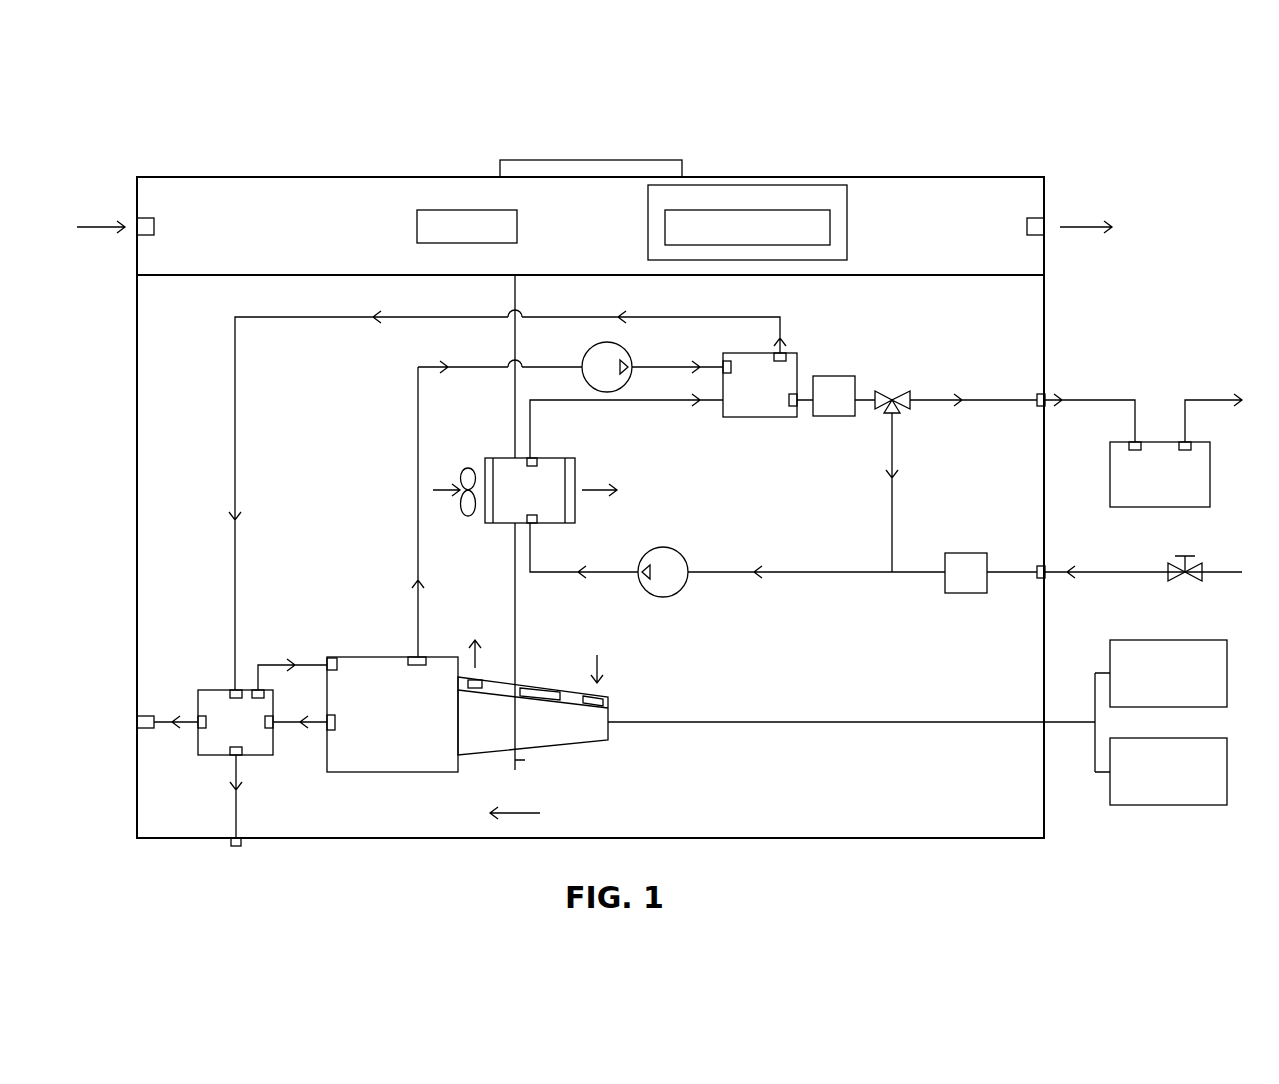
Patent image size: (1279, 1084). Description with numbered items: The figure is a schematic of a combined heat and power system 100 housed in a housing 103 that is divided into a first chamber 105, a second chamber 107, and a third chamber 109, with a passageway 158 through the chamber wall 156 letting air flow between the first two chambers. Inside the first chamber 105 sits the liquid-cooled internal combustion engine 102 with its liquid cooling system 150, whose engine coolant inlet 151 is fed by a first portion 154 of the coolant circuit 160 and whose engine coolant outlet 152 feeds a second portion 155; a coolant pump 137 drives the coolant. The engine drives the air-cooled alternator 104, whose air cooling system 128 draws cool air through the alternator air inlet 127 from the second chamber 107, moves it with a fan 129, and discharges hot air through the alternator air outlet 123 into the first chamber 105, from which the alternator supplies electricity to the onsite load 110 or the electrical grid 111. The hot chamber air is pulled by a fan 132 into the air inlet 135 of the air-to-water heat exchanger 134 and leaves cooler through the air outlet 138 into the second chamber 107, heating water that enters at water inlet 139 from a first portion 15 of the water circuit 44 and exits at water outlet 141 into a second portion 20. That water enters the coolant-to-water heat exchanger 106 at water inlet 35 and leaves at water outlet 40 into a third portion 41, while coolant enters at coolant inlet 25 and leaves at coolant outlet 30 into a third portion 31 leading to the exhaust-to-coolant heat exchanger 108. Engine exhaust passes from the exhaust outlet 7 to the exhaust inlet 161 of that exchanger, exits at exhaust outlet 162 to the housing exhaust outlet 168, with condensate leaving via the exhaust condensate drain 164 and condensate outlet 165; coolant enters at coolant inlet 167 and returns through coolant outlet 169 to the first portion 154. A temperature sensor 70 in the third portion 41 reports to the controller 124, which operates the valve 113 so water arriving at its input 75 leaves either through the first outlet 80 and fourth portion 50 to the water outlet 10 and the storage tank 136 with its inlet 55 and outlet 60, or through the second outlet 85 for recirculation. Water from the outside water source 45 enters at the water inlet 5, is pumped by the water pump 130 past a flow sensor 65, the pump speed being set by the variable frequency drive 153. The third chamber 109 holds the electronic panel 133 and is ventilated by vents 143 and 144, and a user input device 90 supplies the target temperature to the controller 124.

The combined heat and power system 100 is at (1106, 146).
The first chamber 105 is at (165, 338).
The third chamber 109 is at (827, 168).
The user input device 90 is at (514, 160).
The air inlet or vent 143 is at (154, 227).
The air outlet or vent 144 is at (1027, 227).
The variable frequency drive 153 is at (437, 210).
The electronic panel 133 is at (648, 210).
The controller 124 is at (830, 228).
The second portion of the coolant circuit 155 is at (270, 177).
The third portion of the coolant circuit 31 is at (684, 316).
The coolant circuit 160 is at (274, 338).
The coolant inlet 25 is at (723, 365).
The coolant pump 137 is at (591, 347).
The second portion of the water circuit 20 is at (645, 400).
The coolant-to-water heat exchanger 106 is at (752, 418).
The water inlet 35 is at (740, 417).
The water outlet 40 is at (792, 417).
The coolant outlet 30 is at (790, 354).
The third portion of the water circuit 41 is at (863, 397).
The temperature sensor 70 is at (828, 417).
The valve input 75 is at (889, 391).
The valve 113 is at (903, 393).
The first valve outlet 80 is at (903, 406).
The second valve outlet 85 is at (886, 411).
The fourth portion of the water circuit 50 is at (984, 398).
The water outlet 10 is at (1045, 393).
The storage tank 136 is at (1143, 508).
The storage tank inlet 55 is at (1129, 442).
The storage tank outlet 60 is at (1191, 442).
The first portion of the water circuit 15 is at (768, 573).
The water circuit 44 is at (828, 590).
The water pump 130 is at (679, 552).
The water inlet 5 is at (1045, 568).
The flow sensor or switch 65 is at (970, 594).
The outside water source 45 is at (1186, 580).
The air-to-water heat exchanger 134 is at (500, 523).
The air inlet 135 is at (487, 462).
The air outlet 138 is at (572, 504).
The water outlet 141 is at (537, 459).
The water inlet 139 is at (537, 522).
The fan 132 is at (463, 506).
The chamber wall 156 is at (526, 760).
The internal combustion engine 102 is at (395, 773).
The liquid cooling system 150 is at (392, 657).
The engine coolant inlet 151 is at (328, 658).
The engine coolant outlet 152 is at (415, 657).
The exhaust outlet 7 is at (327, 735).
The air-cooled alternator 104 is at (600, 740).
The alternator air inlet 127 is at (605, 697).
The alternator air outlet 123 is at (480, 677).
The fan 129 is at (540, 688).
The air cooling system 128 is at (580, 690).
The passageway 158 is at (525, 800).
The exhaust-to-coolant heat exchanger 108 is at (196, 745).
The coolant inlet 167 is at (229, 691).
The coolant outlet 169 is at (262, 691).
The first portion of the coolant circuit 154 is at (275, 665).
The exhaust outlet 162 is at (198, 712).
The exhaust inlet 161 is at (273, 730).
The exhaust condensate drain 164 is at (229, 757).
The housing exhaust outlet 168 is at (137, 724).
The condensate outlet 165 is at (235, 846).
The electrical grid 111 is at (1220, 640).
The onsite load 110 is at (1220, 738).
The housing 103 is at (1046, 773).
The second chamber 107 is at (1027, 808).